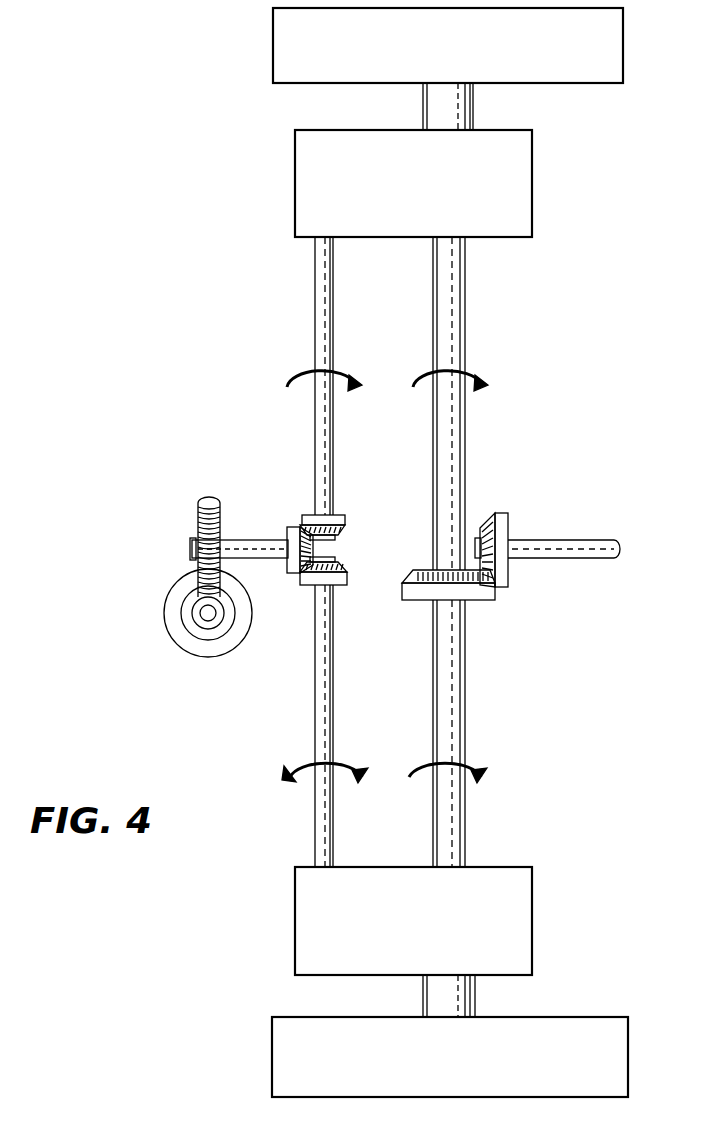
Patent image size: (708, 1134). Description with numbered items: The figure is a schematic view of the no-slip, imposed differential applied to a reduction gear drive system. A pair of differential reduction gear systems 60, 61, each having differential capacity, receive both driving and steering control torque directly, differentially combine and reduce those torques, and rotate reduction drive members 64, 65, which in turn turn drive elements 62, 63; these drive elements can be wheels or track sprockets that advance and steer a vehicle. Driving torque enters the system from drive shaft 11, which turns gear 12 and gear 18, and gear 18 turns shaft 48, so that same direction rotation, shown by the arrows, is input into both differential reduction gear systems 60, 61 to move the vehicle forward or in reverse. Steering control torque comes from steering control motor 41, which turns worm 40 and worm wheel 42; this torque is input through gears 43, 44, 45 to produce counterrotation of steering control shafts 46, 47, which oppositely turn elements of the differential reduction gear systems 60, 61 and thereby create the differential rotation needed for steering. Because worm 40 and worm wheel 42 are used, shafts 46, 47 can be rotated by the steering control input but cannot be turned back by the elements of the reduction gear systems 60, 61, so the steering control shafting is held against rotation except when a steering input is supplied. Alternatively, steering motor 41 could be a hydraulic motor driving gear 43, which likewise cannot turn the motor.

The drive shaft 11 is at (608, 559).
The gear 12 is at (503, 513).
The gear 18 is at (480, 600).
The worm 40 is at (200, 612).
The steering control motor 41 is at (166, 632).
The worm wheel 42 is at (196, 504).
The gear 43 is at (290, 527).
The gear 44 is at (345, 515).
The gear 45 is at (345, 563).
The steering control shaft 46 is at (320, 283).
The steering control shaft 47 is at (325, 685).
The shaft 48 is at (465, 300).
The differential reduction gear system 60 is at (295, 156).
The differential reduction gear system 61 is at (295, 875).
The drive element 62 is at (273, 30).
The drive element 63 is at (272, 1042).
The reduction drive member 64 is at (473, 97).
The reduction drive member 65 is at (475, 995).